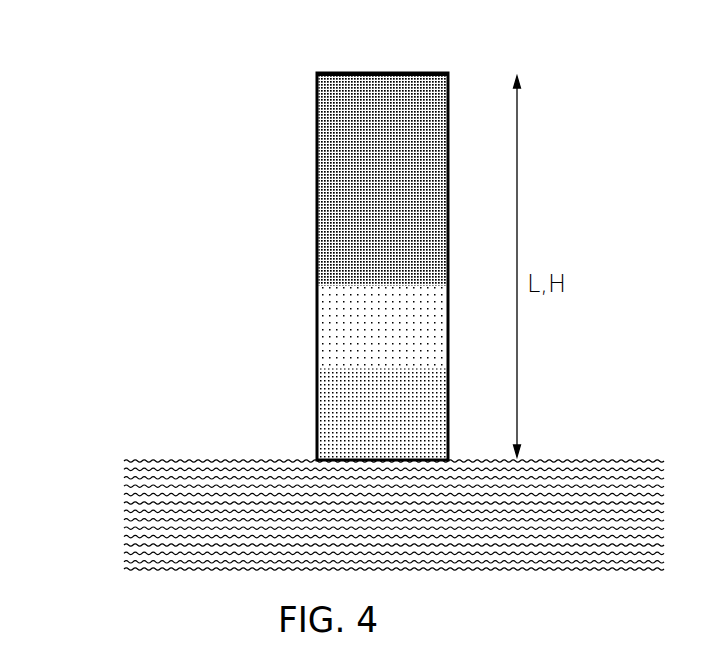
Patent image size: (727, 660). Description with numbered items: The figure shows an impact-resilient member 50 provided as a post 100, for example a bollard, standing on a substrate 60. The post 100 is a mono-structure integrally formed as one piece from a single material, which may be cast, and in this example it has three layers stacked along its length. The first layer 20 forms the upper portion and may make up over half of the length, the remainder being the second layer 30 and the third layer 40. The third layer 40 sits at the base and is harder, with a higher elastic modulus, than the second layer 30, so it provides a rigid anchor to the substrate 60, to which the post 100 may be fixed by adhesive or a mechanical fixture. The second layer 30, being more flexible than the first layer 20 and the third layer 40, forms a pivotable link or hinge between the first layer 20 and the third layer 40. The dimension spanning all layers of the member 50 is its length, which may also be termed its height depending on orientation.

The post 100 is at (455, 73).
The first layer 20 is at (333, 167).
The second layer 30 is at (333, 328).
The third layer 40 is at (333, 417).
The impact-resilient member 50 is at (317, 75).
The substrate 60 is at (147, 515).